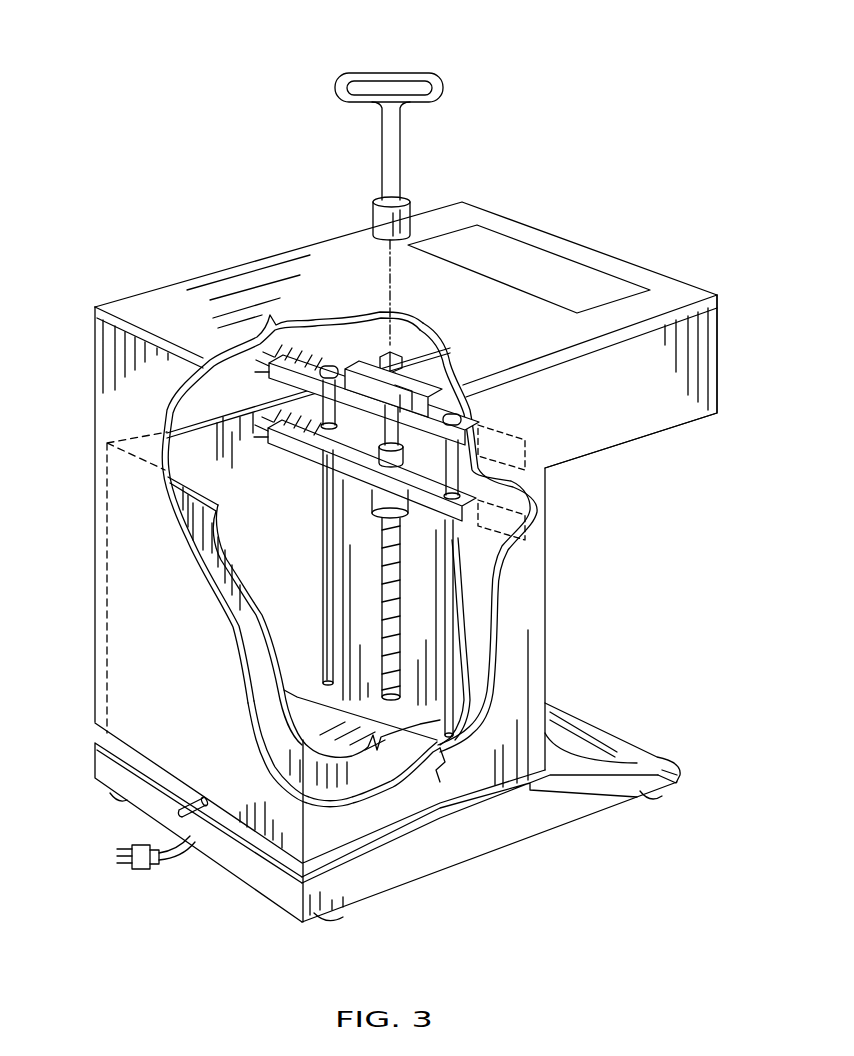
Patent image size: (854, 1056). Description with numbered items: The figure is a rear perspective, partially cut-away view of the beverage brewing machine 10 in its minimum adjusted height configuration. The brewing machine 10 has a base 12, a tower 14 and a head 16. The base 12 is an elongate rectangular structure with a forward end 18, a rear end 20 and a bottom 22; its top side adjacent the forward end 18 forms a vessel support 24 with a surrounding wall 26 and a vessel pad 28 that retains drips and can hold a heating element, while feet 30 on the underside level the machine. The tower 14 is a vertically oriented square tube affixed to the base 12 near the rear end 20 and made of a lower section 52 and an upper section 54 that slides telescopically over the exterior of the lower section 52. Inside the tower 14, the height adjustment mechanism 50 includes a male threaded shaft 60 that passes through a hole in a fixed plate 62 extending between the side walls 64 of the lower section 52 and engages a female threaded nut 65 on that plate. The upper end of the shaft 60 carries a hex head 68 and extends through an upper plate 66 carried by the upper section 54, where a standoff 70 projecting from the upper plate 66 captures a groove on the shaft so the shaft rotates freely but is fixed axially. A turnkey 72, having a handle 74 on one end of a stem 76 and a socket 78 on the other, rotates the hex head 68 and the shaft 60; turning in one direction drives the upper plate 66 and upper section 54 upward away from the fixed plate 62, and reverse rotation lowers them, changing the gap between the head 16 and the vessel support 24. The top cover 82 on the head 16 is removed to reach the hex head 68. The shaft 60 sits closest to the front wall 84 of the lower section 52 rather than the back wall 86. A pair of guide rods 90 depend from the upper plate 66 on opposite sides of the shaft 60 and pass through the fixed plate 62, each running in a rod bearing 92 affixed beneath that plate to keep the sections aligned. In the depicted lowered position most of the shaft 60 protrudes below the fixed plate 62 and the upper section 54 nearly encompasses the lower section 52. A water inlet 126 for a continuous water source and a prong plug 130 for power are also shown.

The brewing machine 10 is at (650, 131).
The base 12 is at (411, 814).
The tower 14 is at (91, 563).
The head 16 is at (708, 360).
The forward end 18 is at (636, 726).
The rear end 20 is at (243, 887).
The bottom 22 is at (445, 877).
The vessel support 24 is at (585, 753).
The surrounding wall 26 is at (650, 750).
The vessel pad 28 is at (550, 737).
The feet 30 is at (327, 925).
The height adjustment mechanism 50 is at (411, 534).
The lower section 52 is at (252, 596).
The upper section 54 is at (488, 592).
The male threaded shaft 60 is at (403, 637).
The fixed plate 62 is at (292, 448).
The side walls 64 is at (237, 535).
The female threaded nut 65 is at (377, 503).
The upper plate 66 is at (472, 403).
The hex head 68 is at (390, 355).
The standoff 70 is at (447, 365).
The turnkey 72 is at (414, 131).
The handle 74 is at (393, 72).
The stem 76 is at (390, 145).
The socket 78 is at (378, 222).
The top cover 82 is at (168, 300).
The front wall 84 is at (445, 612).
The back wall 86 is at (258, 665).
The guide rods 90 is at (325, 605).
The rod bearing 92 is at (313, 472).
The water inlet 126 is at (178, 813).
The plug 130 is at (140, 872).